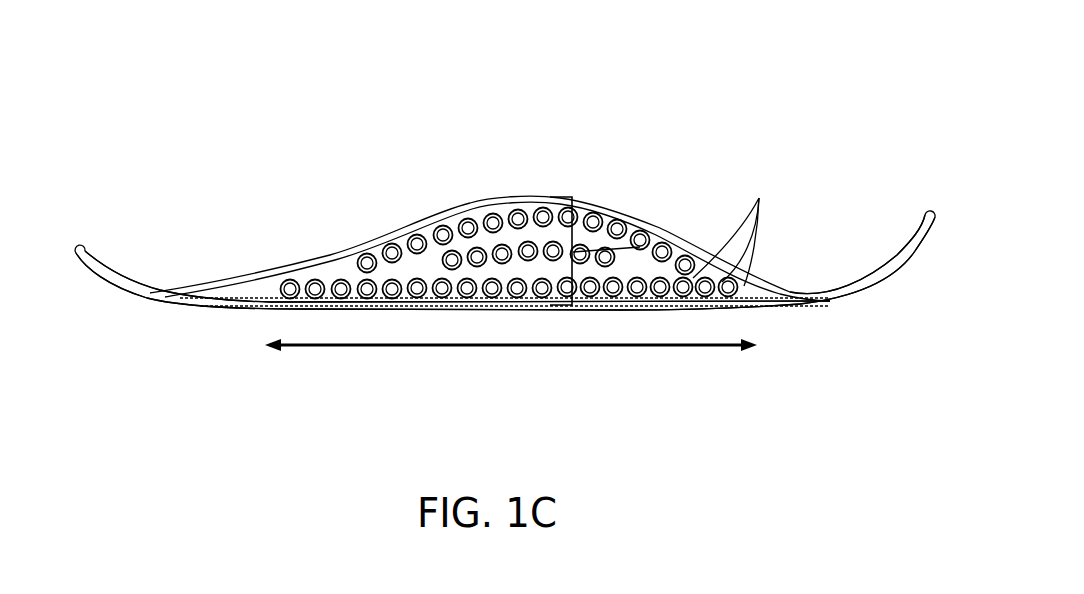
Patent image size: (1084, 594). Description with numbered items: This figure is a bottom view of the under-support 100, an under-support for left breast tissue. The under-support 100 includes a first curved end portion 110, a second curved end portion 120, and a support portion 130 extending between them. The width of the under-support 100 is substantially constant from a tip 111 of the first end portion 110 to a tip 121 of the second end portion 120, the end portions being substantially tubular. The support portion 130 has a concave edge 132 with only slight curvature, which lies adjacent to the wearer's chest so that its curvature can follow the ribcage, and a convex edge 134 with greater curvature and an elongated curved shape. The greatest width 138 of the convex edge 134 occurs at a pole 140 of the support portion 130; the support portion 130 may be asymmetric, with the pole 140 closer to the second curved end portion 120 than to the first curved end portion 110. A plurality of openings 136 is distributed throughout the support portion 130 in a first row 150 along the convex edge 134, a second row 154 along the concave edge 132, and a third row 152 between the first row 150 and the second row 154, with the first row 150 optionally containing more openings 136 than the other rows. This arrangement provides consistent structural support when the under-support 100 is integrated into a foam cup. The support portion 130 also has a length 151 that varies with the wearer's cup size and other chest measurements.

The under-support 100 is at (181, 149).
The first curved end portion 110 is at (142, 296).
The tip of the first end portion 111 is at (76, 258).
The second curved end portion 120 is at (900, 250).
The tip of the second end portion 121 is at (932, 211).
The support portion 130 is at (632, 300).
The concave edge 132 is at (513, 302).
The convex edge 134 is at (645, 208).
The openings 136 is at (759, 198).
The greatest width of the convex edge 138 is at (665, 243).
The pole of the support portion 140 is at (551, 197).
The first row of openings 150 is at (352, 262).
The length of the support portion 151 is at (563, 348).
The third row of openings 152 is at (468, 248).
The second row of openings 154 is at (340, 302).